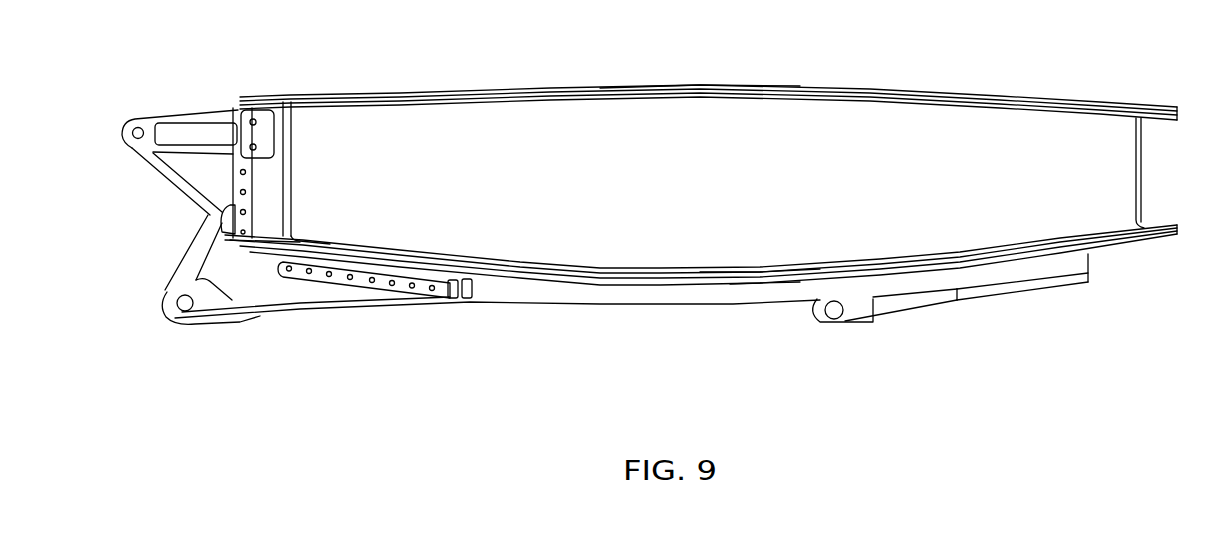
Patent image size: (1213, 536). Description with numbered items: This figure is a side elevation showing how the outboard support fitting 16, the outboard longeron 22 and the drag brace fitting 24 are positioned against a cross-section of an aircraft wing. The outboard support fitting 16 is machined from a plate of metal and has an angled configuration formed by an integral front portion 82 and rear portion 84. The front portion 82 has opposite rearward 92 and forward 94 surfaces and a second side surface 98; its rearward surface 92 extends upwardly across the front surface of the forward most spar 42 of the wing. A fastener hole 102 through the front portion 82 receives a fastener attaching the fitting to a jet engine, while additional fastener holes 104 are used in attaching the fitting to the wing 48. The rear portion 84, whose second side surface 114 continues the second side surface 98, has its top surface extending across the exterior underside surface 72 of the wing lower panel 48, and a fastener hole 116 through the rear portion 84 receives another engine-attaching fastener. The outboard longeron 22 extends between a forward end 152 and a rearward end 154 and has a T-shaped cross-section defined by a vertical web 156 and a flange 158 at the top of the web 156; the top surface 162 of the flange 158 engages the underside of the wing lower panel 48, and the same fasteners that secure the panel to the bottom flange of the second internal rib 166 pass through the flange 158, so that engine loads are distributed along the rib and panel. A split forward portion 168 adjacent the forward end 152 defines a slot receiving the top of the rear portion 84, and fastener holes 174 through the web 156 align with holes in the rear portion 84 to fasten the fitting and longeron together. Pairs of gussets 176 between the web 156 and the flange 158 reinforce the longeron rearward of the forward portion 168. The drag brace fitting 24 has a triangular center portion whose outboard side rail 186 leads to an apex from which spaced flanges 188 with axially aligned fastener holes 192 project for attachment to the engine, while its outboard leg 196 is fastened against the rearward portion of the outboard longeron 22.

The outboard support fitting 16 is at (213, 415).
The outboard longeron 22 is at (543, 302).
The drag brace fitting 24 is at (962, 310).
The forward most spar 42 is at (285, 168).
The wing lower panel 48 is at (767, 283).
The exterior underside surface 72 is at (735, 280).
The front portion 82 is at (124, 170).
The rear portion 84 is at (306, 320).
The rearward surface 92 is at (253, 195).
The forward surface 94 is at (167, 183).
The second side surface 98 is at (208, 256).
The fastener hole 102 is at (132, 124).
The additional fastener holes 104 is at (240, 165).
The second side surface 114 is at (232, 302).
The fastener hole 116 is at (173, 309).
The forward end 152 is at (282, 263).
The rearward end 154 is at (1090, 258).
The vertical web 156 is at (605, 298).
The flange 158 is at (677, 278).
The top surface 162 is at (657, 282).
The second internal rib 166 is at (792, 150).
The forward portion 168 is at (377, 295).
The fastener holes 174 is at (421, 290).
The gussets 176 is at (462, 302).
The outboard side rail 186 is at (887, 307).
The spaced flanges 188 is at (843, 318).
The fastener holes 192 is at (835, 319).
The outboard leg 196 is at (1013, 290).